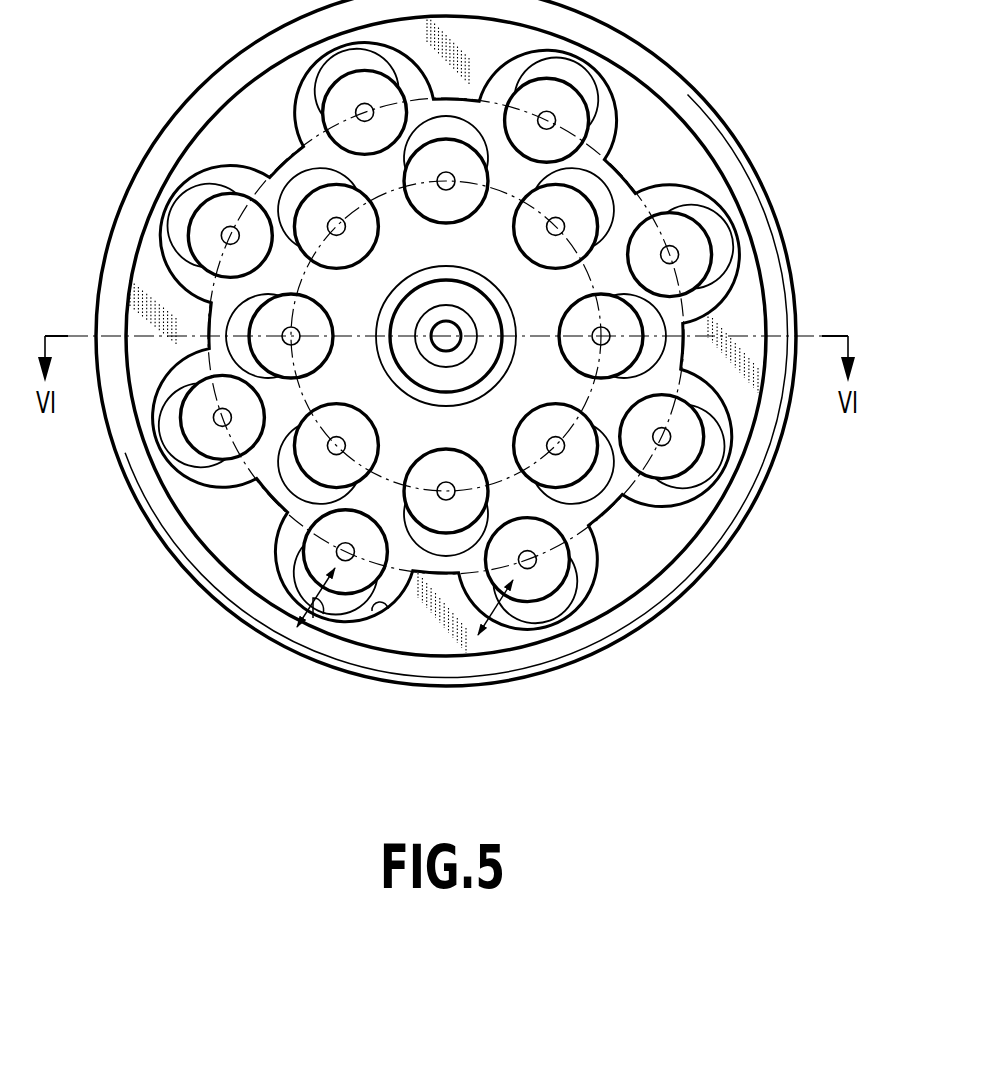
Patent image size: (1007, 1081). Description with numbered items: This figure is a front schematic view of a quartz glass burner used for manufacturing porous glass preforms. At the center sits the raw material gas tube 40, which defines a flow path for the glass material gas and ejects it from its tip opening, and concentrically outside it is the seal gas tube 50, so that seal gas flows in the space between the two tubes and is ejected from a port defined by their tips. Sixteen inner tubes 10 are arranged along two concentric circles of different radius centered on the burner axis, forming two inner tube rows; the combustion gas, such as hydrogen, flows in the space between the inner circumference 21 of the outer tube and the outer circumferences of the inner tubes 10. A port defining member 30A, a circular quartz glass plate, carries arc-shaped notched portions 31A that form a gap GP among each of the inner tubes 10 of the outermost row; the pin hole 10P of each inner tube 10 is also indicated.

The inner tube 10 is at (693, 457).
The planetary gear pin hole 10P is at (663, 438).
The inner circumference of the outer tube 21 is at (180, 520).
The port defining member 30A is at (233, 540).
The notched portion 31A is at (383, 604).
The raw material gas tube 40 is at (433, 323).
The seal gas tube 50 is at (503, 293).
The gap GP is at (328, 575).